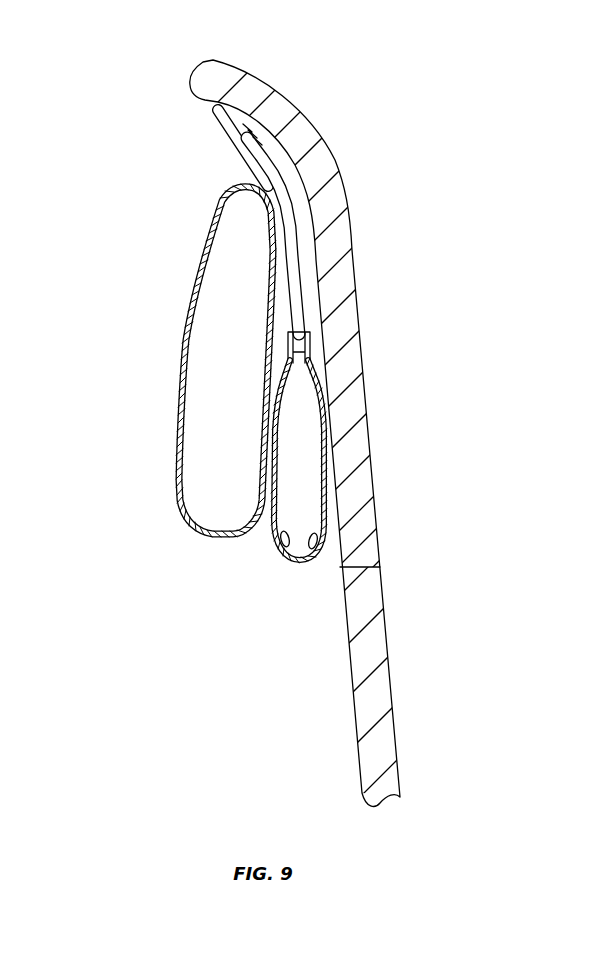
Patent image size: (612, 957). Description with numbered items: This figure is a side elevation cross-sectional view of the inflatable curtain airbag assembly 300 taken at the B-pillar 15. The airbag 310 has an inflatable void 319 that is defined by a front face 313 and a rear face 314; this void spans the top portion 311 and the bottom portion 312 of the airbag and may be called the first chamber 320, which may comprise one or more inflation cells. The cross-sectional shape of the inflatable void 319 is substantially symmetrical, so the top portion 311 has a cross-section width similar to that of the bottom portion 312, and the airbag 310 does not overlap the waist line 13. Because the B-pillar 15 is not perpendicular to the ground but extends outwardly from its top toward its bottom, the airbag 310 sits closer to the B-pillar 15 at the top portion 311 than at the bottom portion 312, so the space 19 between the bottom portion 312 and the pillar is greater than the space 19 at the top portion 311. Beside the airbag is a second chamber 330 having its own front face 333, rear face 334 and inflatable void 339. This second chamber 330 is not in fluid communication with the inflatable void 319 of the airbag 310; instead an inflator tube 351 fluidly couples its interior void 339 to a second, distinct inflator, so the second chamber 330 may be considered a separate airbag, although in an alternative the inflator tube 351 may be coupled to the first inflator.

The inflatable curtain airbag assembly 300 is at (138, 108).
The airbag 310 is at (174, 210).
The top portion 311 is at (230, 164).
The bottom portion 312 is at (160, 528).
The front face 313 is at (178, 396).
The rear face 314 is at (300, 333).
The inflatable void 319 is at (206, 426).
The first chamber 320 is at (150, 438).
The second chamber 330 is at (256, 567).
The front face 333 is at (288, 562).
The rear face 334 is at (316, 533).
The inflatable void 339 is at (283, 477).
The inflator tube 351 is at (292, 208).
The B-pillar 15 is at (334, 287).
The waist line 13 is at (370, 563).
The space 19 is at (283, 228).